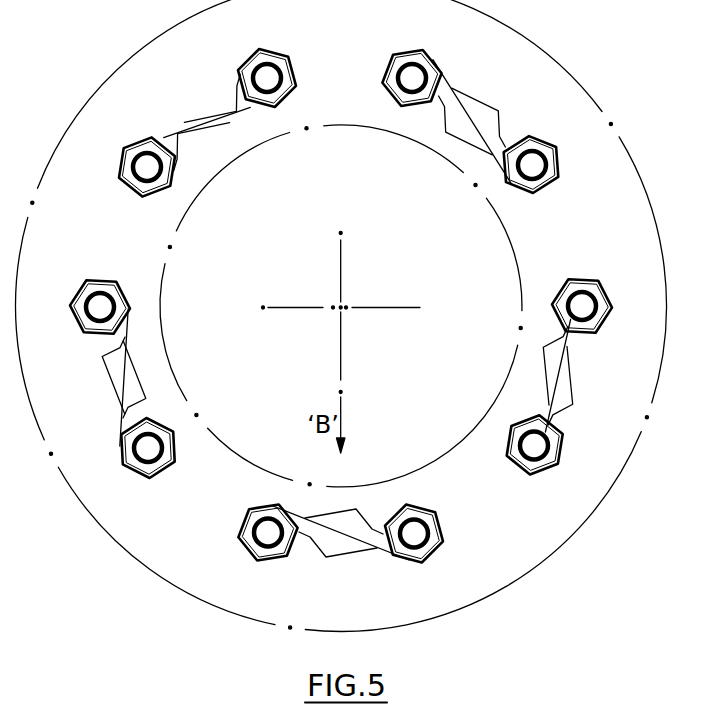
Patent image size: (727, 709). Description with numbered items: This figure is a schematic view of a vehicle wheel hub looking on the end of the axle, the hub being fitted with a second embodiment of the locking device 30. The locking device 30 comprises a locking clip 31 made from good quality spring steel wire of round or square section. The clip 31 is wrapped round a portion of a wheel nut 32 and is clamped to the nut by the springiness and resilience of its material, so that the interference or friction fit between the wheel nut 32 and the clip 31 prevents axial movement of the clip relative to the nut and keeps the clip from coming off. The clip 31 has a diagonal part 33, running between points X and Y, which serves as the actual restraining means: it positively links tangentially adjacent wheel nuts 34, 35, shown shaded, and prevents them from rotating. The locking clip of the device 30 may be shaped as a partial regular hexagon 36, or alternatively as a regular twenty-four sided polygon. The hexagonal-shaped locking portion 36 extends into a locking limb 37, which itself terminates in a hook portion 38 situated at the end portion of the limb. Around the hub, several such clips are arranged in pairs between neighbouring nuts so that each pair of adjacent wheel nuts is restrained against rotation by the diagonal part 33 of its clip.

The locking device 30 is at (499, 101).
The locking clip 31 is at (185, 115).
The wheel nut 32 is at (557, 150).
The diagonal part 33 is at (556, 380).
The wheel nut 34 is at (541, 450).
The wheel nut 35 is at (604, 298).
The partial regular hexagon 36 is at (118, 295).
The locking limb 37 is at (327, 515).
The hook portion 38 is at (110, 340).